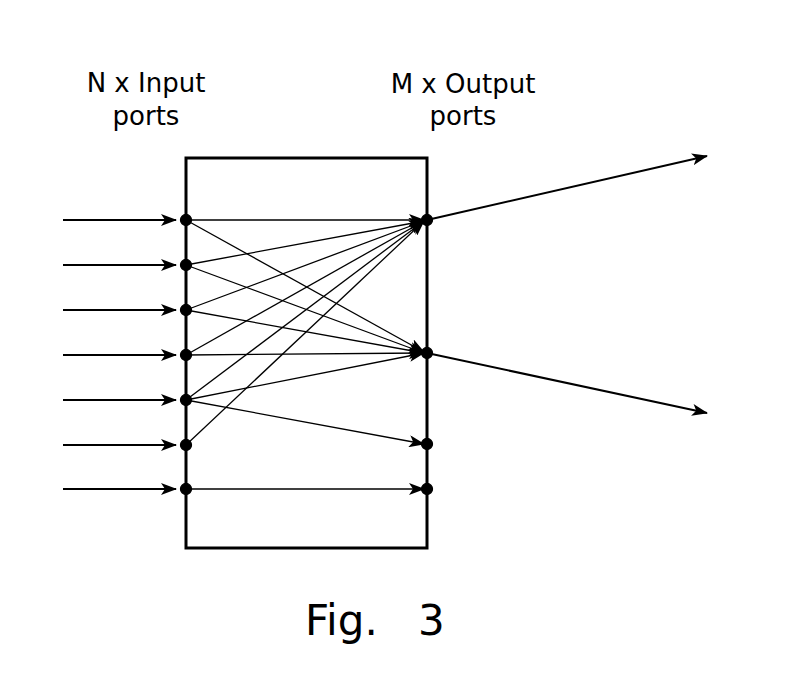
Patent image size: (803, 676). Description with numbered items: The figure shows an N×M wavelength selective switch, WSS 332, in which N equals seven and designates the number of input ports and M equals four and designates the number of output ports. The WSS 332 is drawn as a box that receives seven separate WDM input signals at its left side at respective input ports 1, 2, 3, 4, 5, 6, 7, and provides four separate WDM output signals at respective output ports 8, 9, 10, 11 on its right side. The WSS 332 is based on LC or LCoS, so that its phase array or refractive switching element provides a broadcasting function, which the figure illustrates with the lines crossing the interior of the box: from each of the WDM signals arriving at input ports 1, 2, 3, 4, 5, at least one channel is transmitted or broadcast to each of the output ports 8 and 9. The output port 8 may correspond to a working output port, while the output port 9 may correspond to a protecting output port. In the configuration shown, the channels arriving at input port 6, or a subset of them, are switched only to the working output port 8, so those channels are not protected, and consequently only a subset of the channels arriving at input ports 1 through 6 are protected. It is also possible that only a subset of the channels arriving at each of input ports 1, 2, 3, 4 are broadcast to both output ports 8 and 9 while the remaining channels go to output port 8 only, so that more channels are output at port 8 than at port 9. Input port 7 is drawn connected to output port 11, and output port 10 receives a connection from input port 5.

The N×M WSS 332 is at (262, 158).
The input port 1 is at (115, 222).
The input port 2 is at (115, 267).
The input port 3 is at (115, 312).
The input port 4 is at (115, 357).
The input port 5 is at (115, 402).
The input port 6 is at (115, 447).
The input port 7 is at (115, 491).
The working output port 8 is at (565, 191).
The protecting output port 9 is at (565, 369).
The output port 10 is at (447, 443).
The output port 11 is at (447, 488).